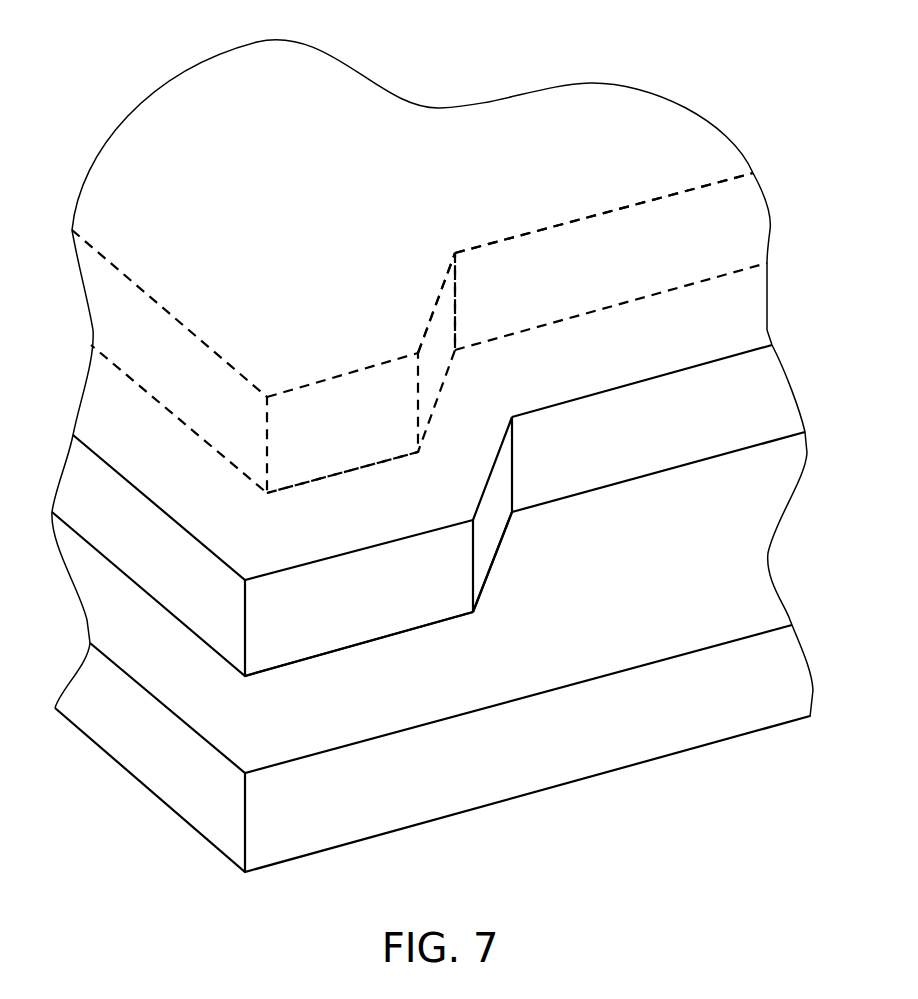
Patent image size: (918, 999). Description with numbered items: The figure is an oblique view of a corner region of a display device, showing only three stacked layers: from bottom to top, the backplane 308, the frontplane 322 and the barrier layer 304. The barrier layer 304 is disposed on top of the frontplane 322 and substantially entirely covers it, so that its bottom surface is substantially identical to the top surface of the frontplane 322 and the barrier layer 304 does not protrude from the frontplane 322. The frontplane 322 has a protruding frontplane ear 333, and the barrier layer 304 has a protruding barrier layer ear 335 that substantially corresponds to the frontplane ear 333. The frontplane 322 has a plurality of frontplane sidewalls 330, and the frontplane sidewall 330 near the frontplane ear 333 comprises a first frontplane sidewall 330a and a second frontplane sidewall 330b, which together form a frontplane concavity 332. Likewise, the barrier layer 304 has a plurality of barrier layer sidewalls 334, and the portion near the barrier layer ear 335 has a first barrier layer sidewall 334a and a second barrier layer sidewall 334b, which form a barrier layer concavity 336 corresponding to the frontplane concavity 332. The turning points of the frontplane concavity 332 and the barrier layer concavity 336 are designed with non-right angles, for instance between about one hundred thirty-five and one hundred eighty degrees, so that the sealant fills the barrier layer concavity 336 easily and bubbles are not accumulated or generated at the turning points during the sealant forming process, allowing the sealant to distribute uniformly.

The frontplane 322 is at (616, 158).
The barrier layer 304 is at (667, 343).
The backplane 308 is at (682, 615).
The frontplane sidewall 330 is at (173, 358).
The first frontplane sidewall 330a is at (540, 268).
The second frontplane sidewall 330b is at (437, 345).
The frontplane concavity 332 is at (453, 235).
The frontplane ear 333 is at (338, 455).
The barrier layer sidewall 334 is at (150, 550).
The first barrier layer sidewall 334a is at (657, 405).
The second barrier layer sidewall 334b is at (485, 533).
The barrier layer ear 335 is at (323, 615).
The barrier layer concavity 336 is at (525, 522).